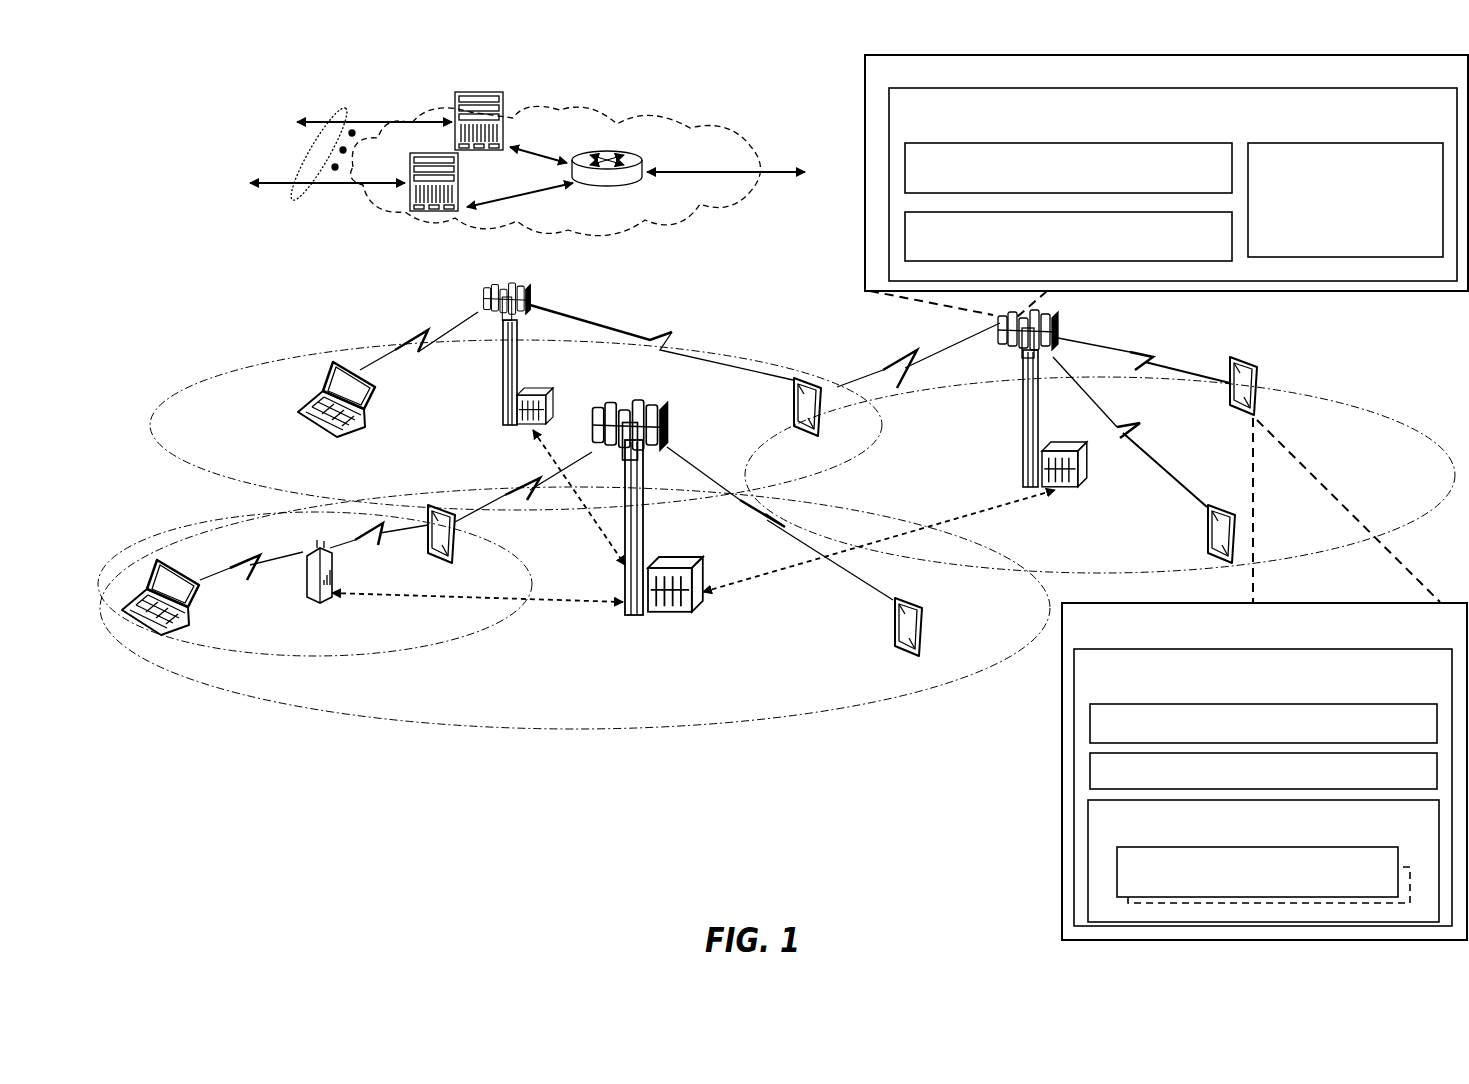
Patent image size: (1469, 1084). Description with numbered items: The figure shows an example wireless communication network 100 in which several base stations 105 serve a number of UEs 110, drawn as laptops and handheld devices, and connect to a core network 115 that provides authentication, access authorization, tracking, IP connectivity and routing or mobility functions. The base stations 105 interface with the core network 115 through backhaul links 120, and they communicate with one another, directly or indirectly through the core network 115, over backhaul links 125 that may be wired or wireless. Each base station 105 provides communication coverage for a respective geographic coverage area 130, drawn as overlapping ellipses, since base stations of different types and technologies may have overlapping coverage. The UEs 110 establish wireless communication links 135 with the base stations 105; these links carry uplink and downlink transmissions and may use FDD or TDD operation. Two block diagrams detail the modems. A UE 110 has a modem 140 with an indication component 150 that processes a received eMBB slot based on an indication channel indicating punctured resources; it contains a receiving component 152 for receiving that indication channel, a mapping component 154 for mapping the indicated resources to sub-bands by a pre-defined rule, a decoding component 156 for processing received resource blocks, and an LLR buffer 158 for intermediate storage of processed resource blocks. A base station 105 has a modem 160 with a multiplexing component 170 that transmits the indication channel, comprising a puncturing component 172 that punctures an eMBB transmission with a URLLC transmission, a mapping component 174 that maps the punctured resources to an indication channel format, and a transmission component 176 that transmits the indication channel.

The wireless communication network 100 is at (188, 141).
The base station 105 is at (503, 393).
The UE 110 is at (353, 430).
The core network 115 is at (640, 225).
The backhaul links 120 is at (305, 195).
The backhaul links 125 is at (600, 530).
The geographic coverage area 130 is at (213, 477).
The wireless communication links 135 is at (418, 345).
The modem 140 is at (1325, 636).
The indication component 150 is at (1405, 687).
The receiving component 152 is at (1403, 733).
The mapping component 154 is at (1397, 782).
The decoding component 156 is at (1402, 839).
The log likelihood ratio (LLR) buffer 158 is at (1337, 884).
The modem 160 is at (1228, 86).
The multiplexing component 170 is at (1322, 126).
The puncturing component 172 is at (1212, 182).
The mapping component 174 is at (1202, 249).
The transmission component 176 is at (1365, 242).